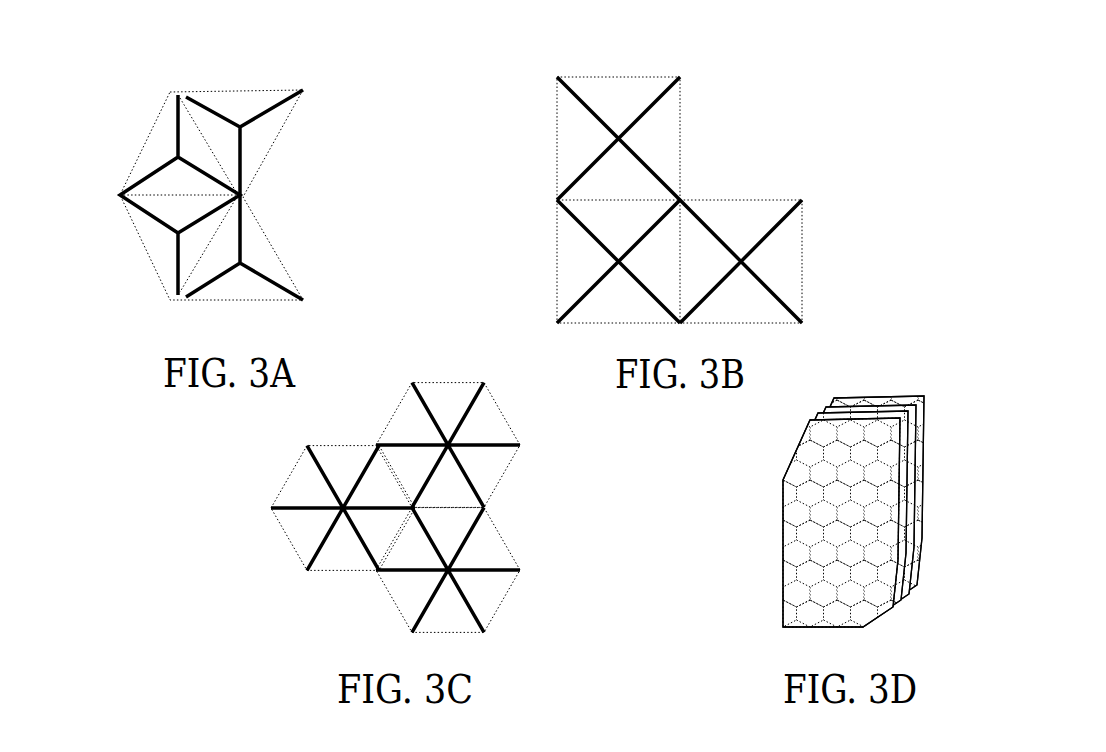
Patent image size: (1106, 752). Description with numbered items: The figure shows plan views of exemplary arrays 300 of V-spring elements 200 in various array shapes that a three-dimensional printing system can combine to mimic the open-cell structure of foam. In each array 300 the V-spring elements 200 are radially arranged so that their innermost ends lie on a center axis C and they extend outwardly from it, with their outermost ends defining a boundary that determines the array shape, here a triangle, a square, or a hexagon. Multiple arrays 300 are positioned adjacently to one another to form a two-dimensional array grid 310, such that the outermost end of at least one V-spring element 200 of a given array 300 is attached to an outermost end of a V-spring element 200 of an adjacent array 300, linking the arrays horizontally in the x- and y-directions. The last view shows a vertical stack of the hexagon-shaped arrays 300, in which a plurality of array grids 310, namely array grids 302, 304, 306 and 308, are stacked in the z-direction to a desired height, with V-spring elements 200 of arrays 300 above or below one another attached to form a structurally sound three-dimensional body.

In FIG. 3A, the V-spring element 200 is at (283, 118).
In FIG. 3B, the V-spring element 200 is at (660, 117).
In FIG. 3C, the V-spring element 200 is at (483, 408).
In FIG. 3A, the array 300 is at (248, 92).
In FIG. 3B, the array 300 is at (560, 125).
In FIG. 3C, the array 300 is at (455, 378).
In FIG. 3D, the array 300 is at (787, 473).
In FIG. 3D, the array grid 302 is at (900, 463).
In FIG. 3D, the array grid 304 is at (911, 447).
In FIG. 3D, the array grid 306 is at (921, 430).
In FIG. 3D, the array grid 308 is at (930, 415).
In FIG. 3A, the 2D array grid 310 is at (148, 70).
In FIG. 3B, the 2D array grid 310 is at (727, 82).
In FIG. 3C, the 2D array grid 310 is at (285, 592).
In FIG. 3D, the 2D array grid 310 is at (990, 412).
In FIG. 3A, the center axis C is at (240, 270).
In FIG. 3B, the center axis C is at (740, 275).
In FIG. 3C, the center axis C is at (345, 527).